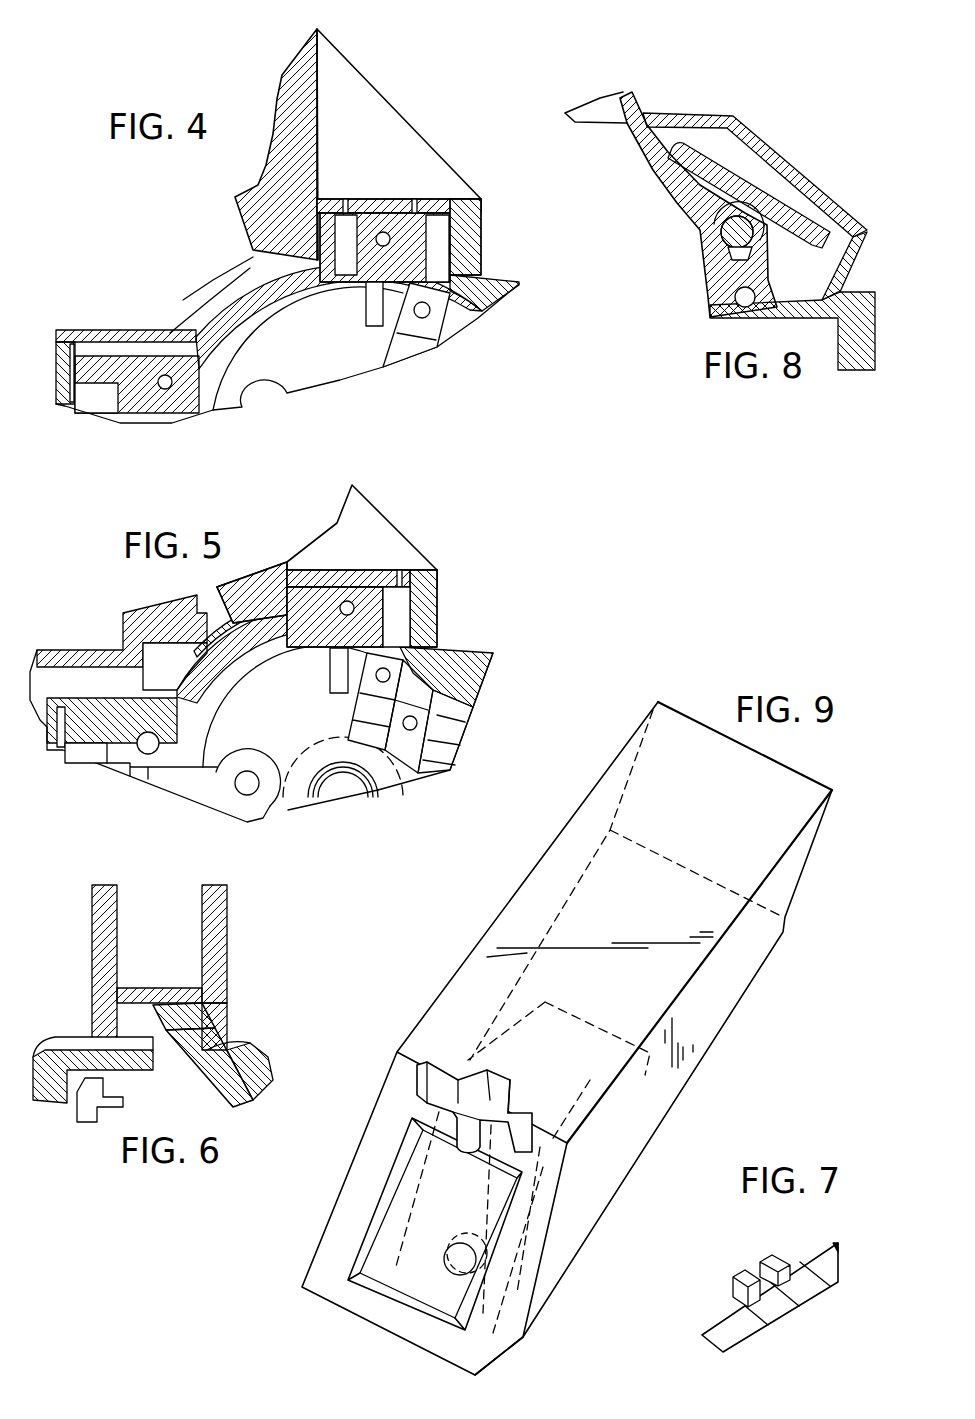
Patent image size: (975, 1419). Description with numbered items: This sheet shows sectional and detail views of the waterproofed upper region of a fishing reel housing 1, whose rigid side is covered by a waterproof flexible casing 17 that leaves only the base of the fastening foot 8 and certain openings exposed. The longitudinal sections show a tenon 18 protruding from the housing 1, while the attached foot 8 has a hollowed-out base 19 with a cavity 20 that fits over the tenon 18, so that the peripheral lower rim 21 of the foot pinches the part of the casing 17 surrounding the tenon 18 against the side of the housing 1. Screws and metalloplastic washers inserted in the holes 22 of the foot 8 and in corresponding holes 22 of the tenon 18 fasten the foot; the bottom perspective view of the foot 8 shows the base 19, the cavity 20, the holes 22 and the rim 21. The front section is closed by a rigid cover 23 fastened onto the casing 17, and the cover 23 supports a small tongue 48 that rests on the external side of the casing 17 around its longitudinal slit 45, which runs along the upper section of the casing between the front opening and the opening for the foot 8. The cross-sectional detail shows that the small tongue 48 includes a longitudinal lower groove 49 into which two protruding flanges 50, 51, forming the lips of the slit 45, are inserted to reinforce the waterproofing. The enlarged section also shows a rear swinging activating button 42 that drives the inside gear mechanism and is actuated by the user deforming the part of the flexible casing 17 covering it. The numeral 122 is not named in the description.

In FIG. 4, the housing 1 is at (495, 306).
In FIG. 6, the housing 1 is at (202, 1080).
In FIG. 4, the fastening foot 8 is at (430, 149).
In FIG. 5, the fastening foot 8 is at (368, 520).
In FIG. 6, the fastening foot 8 is at (222, 921).
In FIG. 9, the fastening foot 8 is at (717, 993).
In FIG. 4, the waterproof flexible casing 17 is at (481, 278).
In FIG. 8, the waterproof flexible casing 17 is at (812, 192).
In FIG. 6, the waterproof flexible casing 17 is at (267, 1060).
In FIG. 7, the waterproof flexible casing 17 is at (803, 1262).
In FIG. 4, the tenon 18 is at (409, 216).
In FIG. 6, the tenon 18 is at (183, 1020).
In FIG. 9, the tenon 18 is at (474, 1107).
In FIG. 9, the base 19 is at (445, 1347).
In FIG. 9, the cavity 20 is at (410, 1258).
In FIG. 4, the peripheral lower rim 21 is at (475, 240).
In FIG. 6, the peripheral lower rim 21 is at (223, 1032).
In FIG. 9, the peripheral lower rim 21 is at (477, 1340).
In FIG. 4, the holes 22 is at (345, 209).
In FIG. 5, the holes 22 is at (399, 575).
In FIG. 9, the holes 22 is at (447, 1258).
In FIG. 4, the rigid cover 23 is at (58, 359).
In FIG. 8, the activating button 42 is at (723, 172).
In FIG. 7, the longitudinal slit 45 is at (753, 1283).
In FIG. 4, the small tongue 48 is at (199, 299).
In FIG. 7, the small tongue 48 is at (778, 1267).
In FIG. 7, the groove 49 is at (752, 1295).
In FIG. 7, the protruding flange 50 is at (773, 1305).
In FIG. 7, the protruding flange 51 is at (755, 1292).
In FIG. 4, the slot 122 is at (344, 240).
In FIG. 5, the slot 122 is at (405, 609).